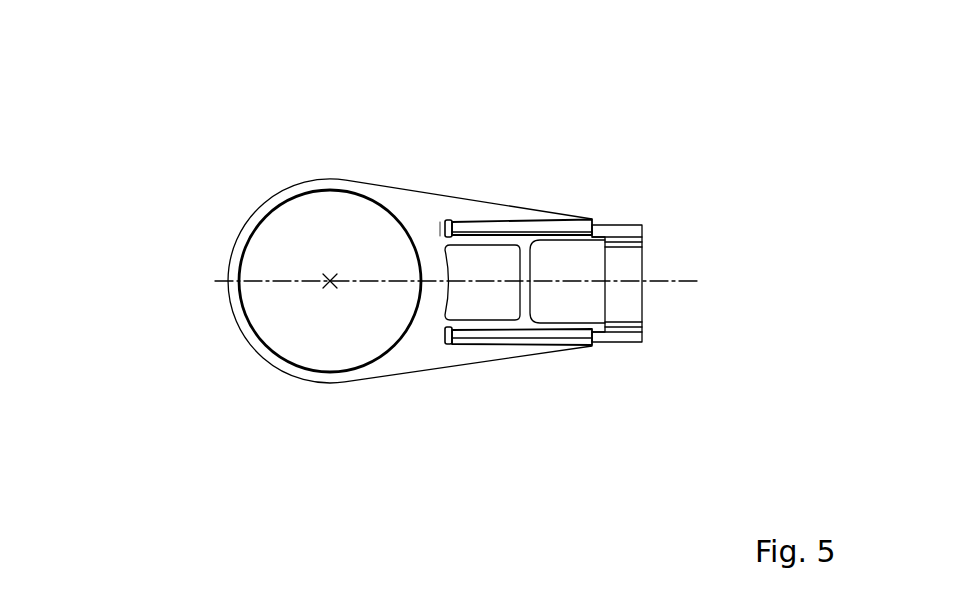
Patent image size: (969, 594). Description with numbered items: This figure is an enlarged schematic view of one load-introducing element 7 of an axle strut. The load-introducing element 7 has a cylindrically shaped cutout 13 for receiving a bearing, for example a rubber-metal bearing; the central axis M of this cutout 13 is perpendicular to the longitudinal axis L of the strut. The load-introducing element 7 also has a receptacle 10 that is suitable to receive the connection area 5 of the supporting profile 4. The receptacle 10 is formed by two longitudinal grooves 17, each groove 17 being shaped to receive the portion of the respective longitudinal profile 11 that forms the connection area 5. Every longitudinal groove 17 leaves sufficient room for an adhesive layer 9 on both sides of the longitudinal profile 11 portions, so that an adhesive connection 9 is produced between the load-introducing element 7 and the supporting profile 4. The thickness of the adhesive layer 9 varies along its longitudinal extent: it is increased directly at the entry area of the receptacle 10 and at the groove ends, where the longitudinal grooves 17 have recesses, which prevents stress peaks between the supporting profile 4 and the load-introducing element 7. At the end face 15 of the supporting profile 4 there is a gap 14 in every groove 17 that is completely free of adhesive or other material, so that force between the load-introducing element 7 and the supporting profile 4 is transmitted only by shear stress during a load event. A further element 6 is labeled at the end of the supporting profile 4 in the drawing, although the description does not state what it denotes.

The supporting profile 4 is at (618, 228).
The connection area 5 is at (530, 218).
The fastening nut 6 is at (627, 303).
The load-introducing element 7 is at (407, 205).
The adhesive layer 9 is at (452, 220).
The receptacle 10 is at (523, 347).
The longitudinal profile 11 is at (632, 229).
The cutout 13 is at (285, 245).
The gap 14 is at (448, 220).
The end face 15 is at (440, 228).
The longitudinal groove 17 is at (497, 220).
The longitudinal axis L is at (697, 285).
The central axis M is at (333, 283).